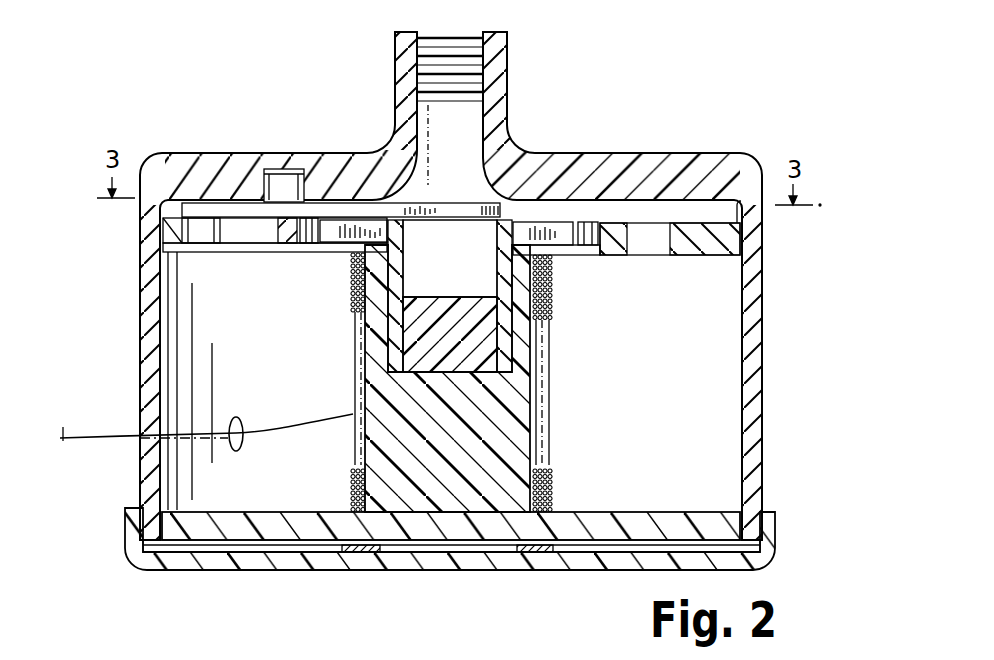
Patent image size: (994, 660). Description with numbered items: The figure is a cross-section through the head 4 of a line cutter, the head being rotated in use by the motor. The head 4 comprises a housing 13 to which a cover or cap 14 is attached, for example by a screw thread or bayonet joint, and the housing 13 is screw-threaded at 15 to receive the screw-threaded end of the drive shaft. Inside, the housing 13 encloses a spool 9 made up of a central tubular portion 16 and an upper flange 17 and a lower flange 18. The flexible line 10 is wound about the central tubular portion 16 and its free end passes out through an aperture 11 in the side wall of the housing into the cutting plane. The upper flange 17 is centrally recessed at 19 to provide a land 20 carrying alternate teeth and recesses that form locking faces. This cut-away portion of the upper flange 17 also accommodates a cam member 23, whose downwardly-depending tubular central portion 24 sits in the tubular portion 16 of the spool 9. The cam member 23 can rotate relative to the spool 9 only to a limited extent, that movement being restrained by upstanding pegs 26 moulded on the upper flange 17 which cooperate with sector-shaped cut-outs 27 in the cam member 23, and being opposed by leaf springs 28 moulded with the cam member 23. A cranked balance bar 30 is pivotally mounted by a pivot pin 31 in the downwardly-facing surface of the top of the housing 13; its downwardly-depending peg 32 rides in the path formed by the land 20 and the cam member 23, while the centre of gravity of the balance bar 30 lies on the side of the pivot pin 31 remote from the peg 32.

The head 4 is at (702, 146).
The spool 9 is at (507, 452).
The flexible line 10 is at (112, 440).
The aperture 11 is at (241, 448).
The housing 13 is at (767, 308).
The cover or cap 14 is at (762, 562).
The screw thread 15 is at (473, 63).
The central tubular portion 16 is at (520, 342).
The upper flange 17 is at (735, 237).
The lower flange 18 is at (708, 513).
The central recess 19 is at (243, 217).
The land 20 is at (178, 214).
The cam member 23 is at (287, 236).
The tubular central portion 24 is at (470, 289).
The upstanding pegs 26 is at (316, 238).
The sector-shaped cut-outs 27 is at (550, 220).
The leaf springs 28 is at (350, 236).
The balance bar 30 is at (362, 208).
The pivot pin 31 is at (285, 182).
The peg 32 is at (202, 230).